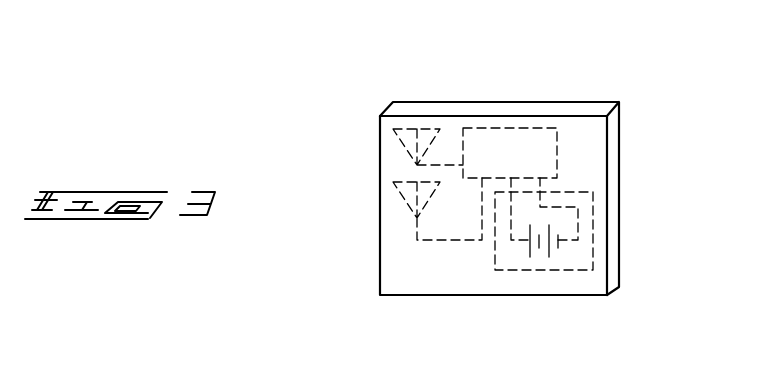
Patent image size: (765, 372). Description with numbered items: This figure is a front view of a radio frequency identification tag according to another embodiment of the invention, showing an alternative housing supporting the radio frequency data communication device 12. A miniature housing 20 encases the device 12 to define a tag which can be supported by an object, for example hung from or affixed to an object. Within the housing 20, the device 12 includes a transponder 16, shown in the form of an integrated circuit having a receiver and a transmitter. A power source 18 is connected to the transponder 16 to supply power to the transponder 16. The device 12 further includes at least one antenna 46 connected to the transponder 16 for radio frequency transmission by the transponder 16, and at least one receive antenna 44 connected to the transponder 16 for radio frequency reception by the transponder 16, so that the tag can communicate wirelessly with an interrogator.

The radio frequency data communication device 12 is at (575, 158).
The transponder 16 is at (530, 128).
The power source 18 is at (593, 230).
The miniature housing 20 is at (380, 253).
The receive antenna 44 is at (420, 125).
The antenna 46 is at (402, 197).